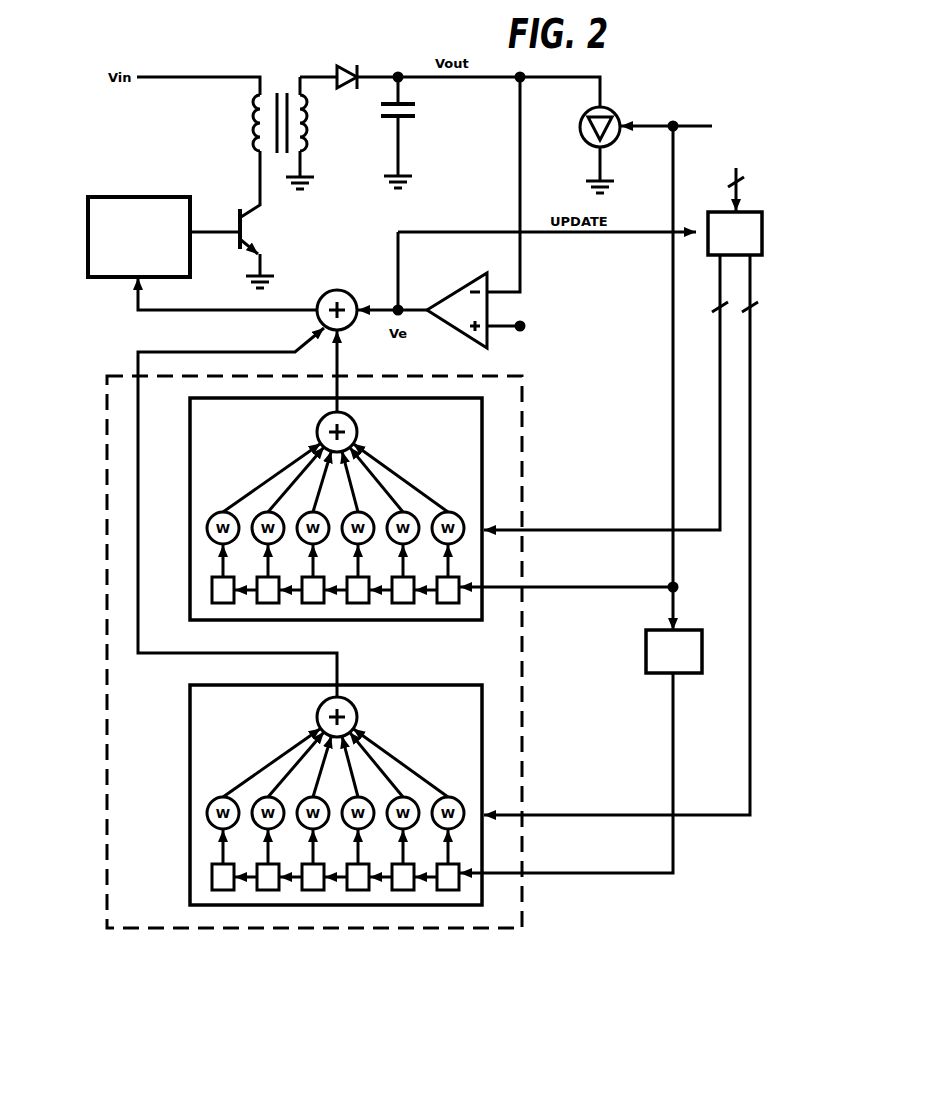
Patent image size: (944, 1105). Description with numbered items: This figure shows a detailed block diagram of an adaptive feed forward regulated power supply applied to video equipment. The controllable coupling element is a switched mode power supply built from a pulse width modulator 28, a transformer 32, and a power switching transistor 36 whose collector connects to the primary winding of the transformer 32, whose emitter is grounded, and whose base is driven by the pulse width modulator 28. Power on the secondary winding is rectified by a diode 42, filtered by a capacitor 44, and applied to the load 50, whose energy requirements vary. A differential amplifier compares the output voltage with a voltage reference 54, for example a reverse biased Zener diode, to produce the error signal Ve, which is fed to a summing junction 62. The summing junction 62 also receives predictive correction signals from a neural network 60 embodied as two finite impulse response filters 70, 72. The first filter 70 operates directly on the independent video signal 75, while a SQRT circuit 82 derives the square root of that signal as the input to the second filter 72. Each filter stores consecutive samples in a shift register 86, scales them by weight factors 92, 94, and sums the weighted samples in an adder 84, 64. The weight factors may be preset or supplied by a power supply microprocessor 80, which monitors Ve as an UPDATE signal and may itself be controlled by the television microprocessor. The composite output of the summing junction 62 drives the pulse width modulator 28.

The pulse width modulator 28 is at (161, 197).
The transformer 32 is at (278, 93).
The power switching transistor 36 is at (252, 217).
The diode 42 is at (349, 90).
The capacitor 44 is at (390, 104).
The load 50 is at (582, 123).
The voltage reference 54 is at (583, 312).
The neural network 60 is at (523, 905).
The summing junction 62 is at (325, 292).
The FIR summer 64 is at (317, 716).
The finite impulse response filter 70 is at (363, 509).
The second finite impulse response filter 72 is at (309, 795).
The independent signal 75 is at (760, 110).
The power supply microprocessor 80 is at (762, 237).
The SQRT circuit 82 is at (646, 648).
The FIR summer 84 is at (317, 431).
The shift register 86 is at (448, 603).
The weight factors 92 is at (362, 512).
The weight factors 94 is at (362, 797).